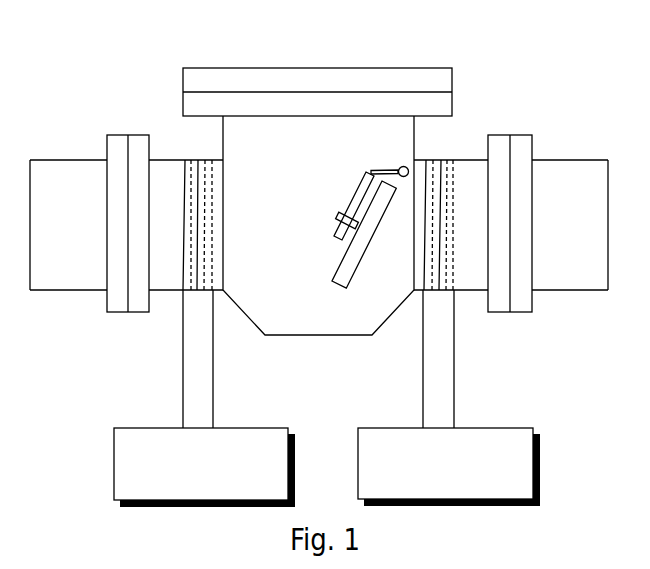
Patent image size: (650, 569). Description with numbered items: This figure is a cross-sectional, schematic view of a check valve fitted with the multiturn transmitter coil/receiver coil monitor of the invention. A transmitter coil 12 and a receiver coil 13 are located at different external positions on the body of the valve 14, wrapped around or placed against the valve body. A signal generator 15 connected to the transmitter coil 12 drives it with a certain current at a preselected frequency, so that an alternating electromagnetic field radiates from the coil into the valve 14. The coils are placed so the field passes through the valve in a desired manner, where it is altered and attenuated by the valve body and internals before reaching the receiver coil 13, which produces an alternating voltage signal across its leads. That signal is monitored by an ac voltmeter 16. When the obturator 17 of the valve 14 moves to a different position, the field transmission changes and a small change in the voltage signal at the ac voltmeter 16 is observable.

The transmitter coil 12 is at (197, 173).
The receiver coil 13 is at (440, 172).
The valve 14 is at (280, 192).
The signal generator 15 is at (148, 447).
The ac voltmeter 16 is at (484, 448).
The obturator 17 is at (372, 172).